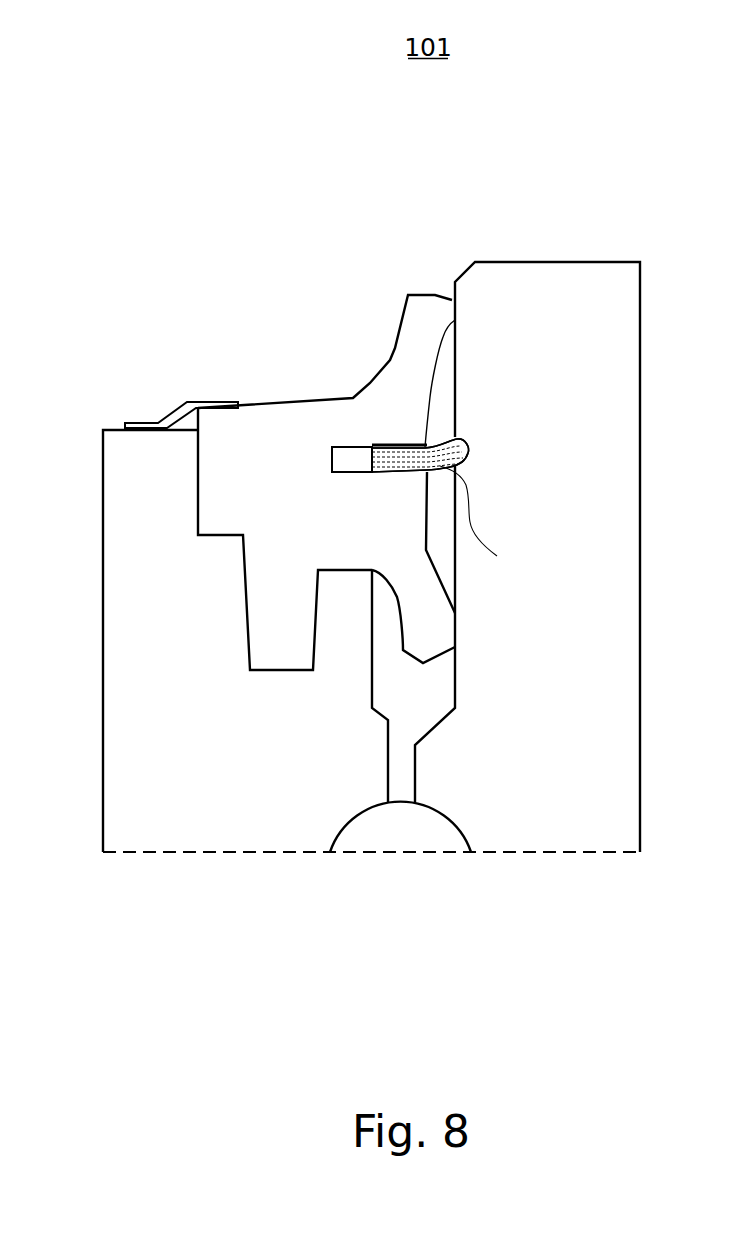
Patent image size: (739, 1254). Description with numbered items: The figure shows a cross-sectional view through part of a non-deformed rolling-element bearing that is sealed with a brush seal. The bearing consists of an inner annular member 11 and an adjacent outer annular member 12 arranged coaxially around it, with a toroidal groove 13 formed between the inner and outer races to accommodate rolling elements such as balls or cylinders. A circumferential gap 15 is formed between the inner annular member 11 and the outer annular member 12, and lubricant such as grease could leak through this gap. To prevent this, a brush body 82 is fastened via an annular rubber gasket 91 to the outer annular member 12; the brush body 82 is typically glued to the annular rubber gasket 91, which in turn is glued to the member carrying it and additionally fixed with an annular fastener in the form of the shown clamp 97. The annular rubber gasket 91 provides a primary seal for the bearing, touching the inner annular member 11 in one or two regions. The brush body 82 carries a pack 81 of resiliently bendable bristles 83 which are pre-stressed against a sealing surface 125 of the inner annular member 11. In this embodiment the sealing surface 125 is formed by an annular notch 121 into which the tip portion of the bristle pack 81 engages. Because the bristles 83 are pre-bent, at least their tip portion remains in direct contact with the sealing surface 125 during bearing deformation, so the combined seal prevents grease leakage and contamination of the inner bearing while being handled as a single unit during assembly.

The inner annular member 11 is at (518, 837).
The outer annular member 12 is at (330, 805).
The toroidal groove 13 is at (398, 842).
The circumferential gap 15 is at (400, 762).
The pack of resiliently bendable bristles 81 is at (445, 443).
The brush body 82 is at (365, 462).
The resiliently bendable bristles 83 is at (487, 520).
The annular rubber gasket 91 is at (278, 426).
The clamp 97 is at (142, 427).
The annular notch 121 is at (469, 448).
The sealing surface 125 is at (420, 455).